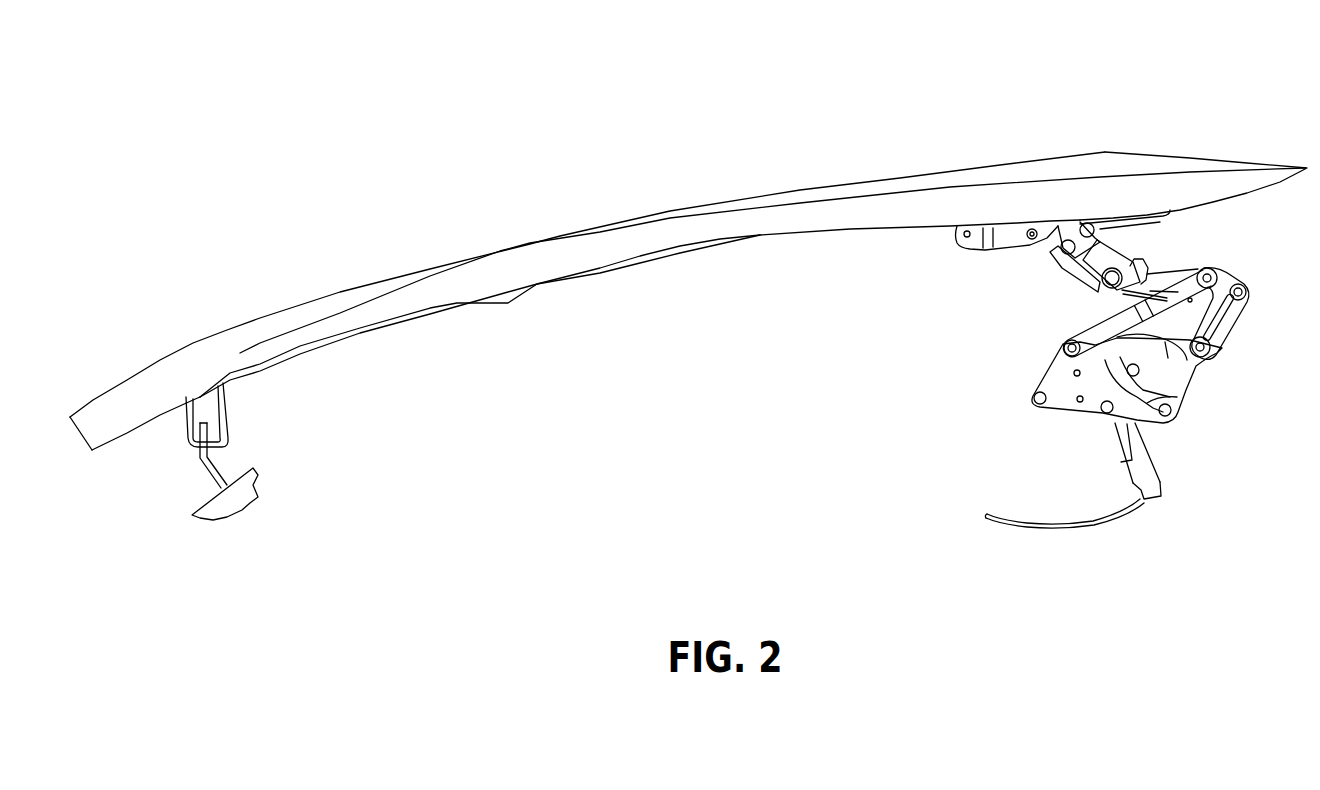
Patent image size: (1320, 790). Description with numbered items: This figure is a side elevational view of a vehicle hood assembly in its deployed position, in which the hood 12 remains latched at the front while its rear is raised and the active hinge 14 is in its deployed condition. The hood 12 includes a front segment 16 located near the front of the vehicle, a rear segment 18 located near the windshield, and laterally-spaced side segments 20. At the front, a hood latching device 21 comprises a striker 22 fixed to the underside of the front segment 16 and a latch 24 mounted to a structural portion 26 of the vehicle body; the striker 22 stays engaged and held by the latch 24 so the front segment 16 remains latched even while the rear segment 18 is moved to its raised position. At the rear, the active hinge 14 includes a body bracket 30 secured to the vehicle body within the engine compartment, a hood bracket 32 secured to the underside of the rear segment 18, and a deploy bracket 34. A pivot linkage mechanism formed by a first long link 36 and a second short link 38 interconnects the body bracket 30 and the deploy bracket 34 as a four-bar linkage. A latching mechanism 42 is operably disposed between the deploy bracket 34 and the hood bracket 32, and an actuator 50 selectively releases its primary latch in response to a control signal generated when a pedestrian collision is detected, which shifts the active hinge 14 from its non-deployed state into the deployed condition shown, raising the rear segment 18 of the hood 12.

The hood 12 is at (733, 195).
The active hinge 14 is at (1129, 370).
The front segment 16 is at (112, 388).
The rear segment 18 is at (1188, 160).
The side segments 20 is at (558, 247).
The hood latching device 21 is at (223, 459).
The striker 22 is at (228, 405).
The latch 24 is at (196, 460).
The structural portion 26 is at (238, 498).
The body bracket 30 is at (1070, 407).
The hood bracket 32 is at (1003, 248).
The deploy bracket 34 is at (1157, 278).
The first long link 36 is at (1107, 335).
The second short link 38 is at (1233, 325).
The latching mechanism 42 is at (1150, 258).
The actuator 50 is at (1142, 475).